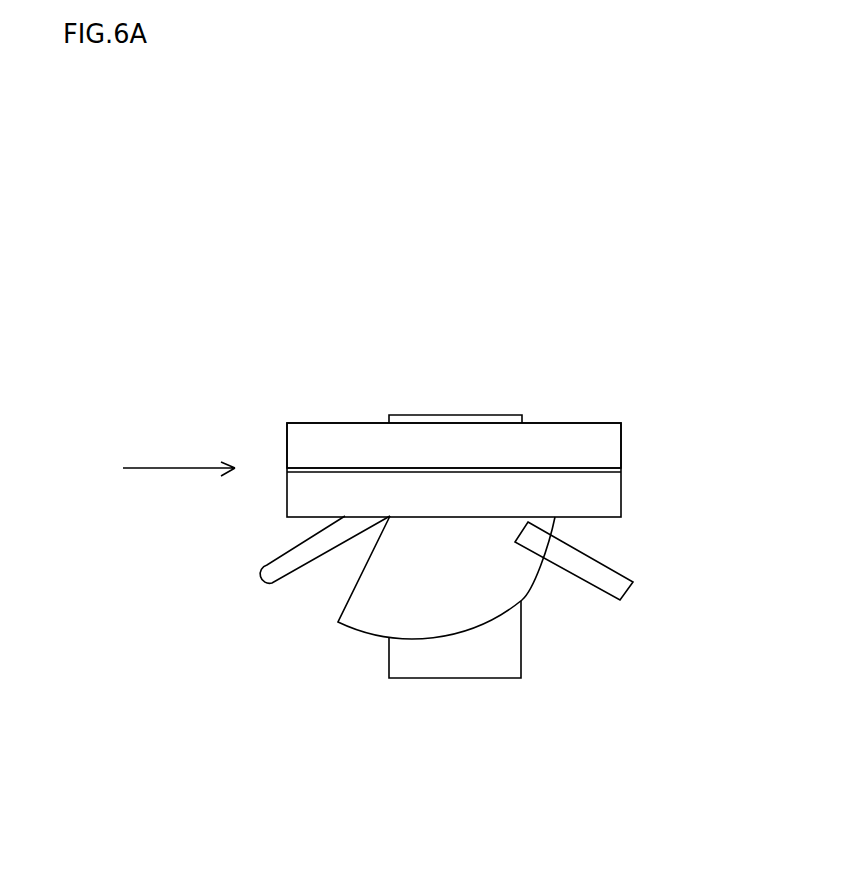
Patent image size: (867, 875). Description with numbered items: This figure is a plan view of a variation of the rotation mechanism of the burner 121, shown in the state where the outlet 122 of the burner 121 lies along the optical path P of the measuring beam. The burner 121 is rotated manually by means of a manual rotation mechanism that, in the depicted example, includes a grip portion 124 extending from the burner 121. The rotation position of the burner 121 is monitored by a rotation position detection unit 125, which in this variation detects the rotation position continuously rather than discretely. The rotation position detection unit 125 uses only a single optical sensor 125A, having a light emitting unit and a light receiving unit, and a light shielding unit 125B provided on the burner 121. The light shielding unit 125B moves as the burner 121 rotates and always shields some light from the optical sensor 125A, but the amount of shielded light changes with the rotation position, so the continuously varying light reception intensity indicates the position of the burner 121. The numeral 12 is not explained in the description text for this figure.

The head unit 12 is at (454, 359).
The burner 121 is at (297, 430).
The outlet 122 is at (347, 468).
The grip portion 124 is at (292, 570).
The rotation position detection unit 125 is at (541, 639).
The optical sensor 125A is at (630, 590).
The light shielding unit 125B is at (445, 637).
The optical path P is at (173, 468).